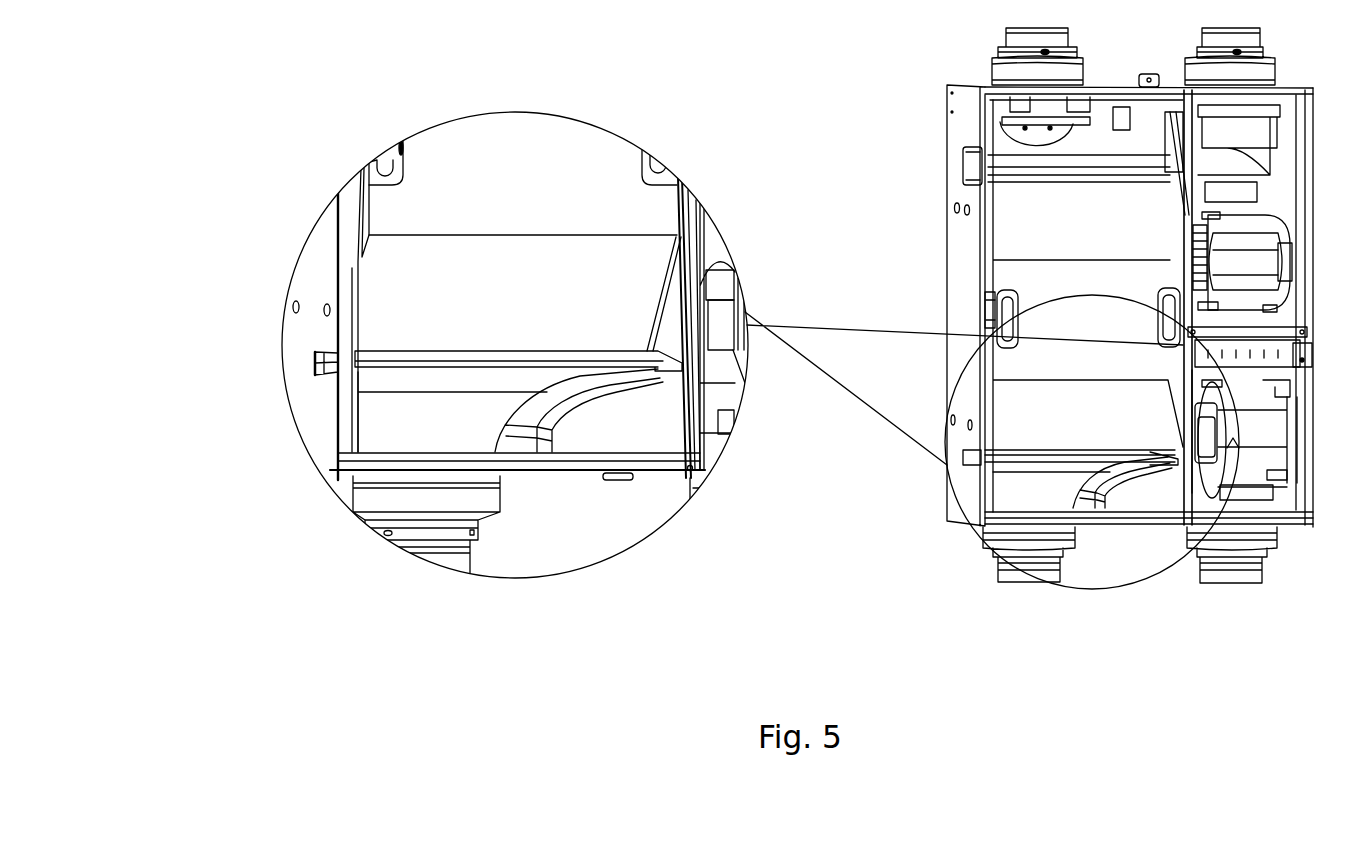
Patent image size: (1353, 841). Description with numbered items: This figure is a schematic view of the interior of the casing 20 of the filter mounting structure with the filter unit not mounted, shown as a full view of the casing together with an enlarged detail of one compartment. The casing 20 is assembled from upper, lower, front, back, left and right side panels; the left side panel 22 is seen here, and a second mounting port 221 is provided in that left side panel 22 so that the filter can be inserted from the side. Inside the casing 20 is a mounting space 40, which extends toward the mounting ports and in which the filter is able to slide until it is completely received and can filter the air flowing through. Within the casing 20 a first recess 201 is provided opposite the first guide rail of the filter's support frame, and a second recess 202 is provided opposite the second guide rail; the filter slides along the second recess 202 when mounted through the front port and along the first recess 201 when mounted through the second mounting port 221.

The casing 20 is at (947, 140).
The left side panel 22 is at (962, 317).
The second mounting port 221 is at (326, 363).
The mounting space 40 is at (452, 412).
The first recess 201 is at (518, 361).
The second recess 202 is at (689, 327).